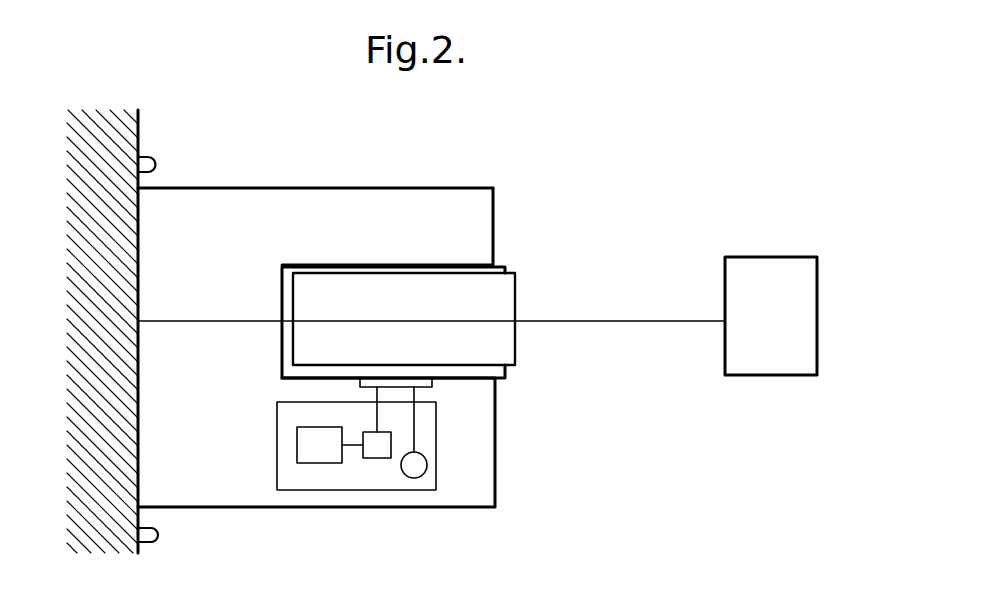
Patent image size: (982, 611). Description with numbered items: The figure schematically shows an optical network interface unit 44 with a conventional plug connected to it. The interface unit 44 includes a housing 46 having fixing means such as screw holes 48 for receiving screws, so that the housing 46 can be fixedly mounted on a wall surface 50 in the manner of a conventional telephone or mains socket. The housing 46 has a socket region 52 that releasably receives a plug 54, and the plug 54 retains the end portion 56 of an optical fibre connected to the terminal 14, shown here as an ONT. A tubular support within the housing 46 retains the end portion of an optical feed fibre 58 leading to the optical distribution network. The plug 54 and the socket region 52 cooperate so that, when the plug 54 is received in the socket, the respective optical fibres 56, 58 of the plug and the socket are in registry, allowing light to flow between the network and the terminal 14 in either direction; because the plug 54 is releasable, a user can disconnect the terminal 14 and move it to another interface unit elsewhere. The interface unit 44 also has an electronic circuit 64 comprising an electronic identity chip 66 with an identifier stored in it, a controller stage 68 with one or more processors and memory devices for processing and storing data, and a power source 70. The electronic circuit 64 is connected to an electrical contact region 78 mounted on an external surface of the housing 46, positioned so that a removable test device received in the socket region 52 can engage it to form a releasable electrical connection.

The terminal 14 is at (768, 375).
The optical network interface unit 44 is at (300, 188).
The housing 46 is at (376, 188).
The screw holes 48 is at (156, 165).
The wall surface 50 is at (138, 123).
The socket region 52 is at (432, 265).
The plug 54 is at (506, 272).
The end portion of optical fibre 56 is at (500, 318).
The optical feed fibre 58 is at (220, 320).
The electronic circuit 64 is at (436, 455).
The electronic identity chip 66 is at (314, 463).
The controller stage 68 is at (377, 458).
The power source 70 is at (420, 476).
The electrical contact region 78 is at (432, 385).